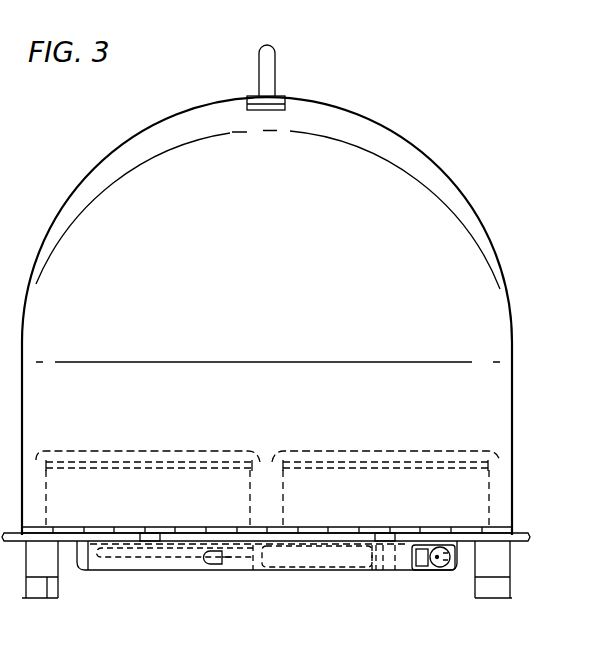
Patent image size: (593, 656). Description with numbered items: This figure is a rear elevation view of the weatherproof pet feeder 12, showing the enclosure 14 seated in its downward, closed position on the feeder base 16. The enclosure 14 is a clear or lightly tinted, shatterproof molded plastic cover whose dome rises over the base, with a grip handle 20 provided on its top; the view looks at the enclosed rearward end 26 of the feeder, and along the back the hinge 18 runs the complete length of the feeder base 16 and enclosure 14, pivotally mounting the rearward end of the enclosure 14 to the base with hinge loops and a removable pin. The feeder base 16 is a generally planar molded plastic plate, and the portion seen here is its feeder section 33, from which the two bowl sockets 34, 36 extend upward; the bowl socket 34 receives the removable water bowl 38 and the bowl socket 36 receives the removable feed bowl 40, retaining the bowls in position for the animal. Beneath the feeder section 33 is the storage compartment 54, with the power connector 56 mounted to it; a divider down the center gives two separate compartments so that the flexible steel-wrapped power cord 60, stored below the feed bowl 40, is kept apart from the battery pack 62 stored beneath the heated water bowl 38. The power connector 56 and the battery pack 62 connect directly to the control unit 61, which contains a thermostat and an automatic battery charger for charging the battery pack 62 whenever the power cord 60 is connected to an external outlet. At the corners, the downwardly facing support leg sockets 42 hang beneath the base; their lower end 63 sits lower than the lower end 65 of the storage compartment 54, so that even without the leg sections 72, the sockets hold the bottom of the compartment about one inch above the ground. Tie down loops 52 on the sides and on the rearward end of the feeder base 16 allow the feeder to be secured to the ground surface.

The weatherproof pet feeder 12 is at (58, 162).
The enclosure 14 is at (373, 137).
The feeder base 16 is at (498, 537).
The hinge 18 is at (218, 530).
The grip handle 20 is at (266, 63).
The enclosed rearward end 26 is at (485, 400).
The feeder section 33 is at (263, 530).
The bowl socket 34 is at (343, 488).
The bowl socket 36 is at (117, 470).
The water bowl 38 is at (365, 450).
The feed bowl 40 is at (132, 467).
The support leg sockets 42 is at (50, 562).
The tie down loops 52 is at (7, 537).
The storage compartment 54 is at (117, 563).
The power connector 56 is at (440, 563).
The power cord 60 is at (213, 570).
The control unit 61 is at (385, 578).
The battery pack 62 is at (363, 575).
The lower end 63 is at (47, 582).
The lower end 65 is at (278, 568).
The leg sections 72 is at (38, 595).